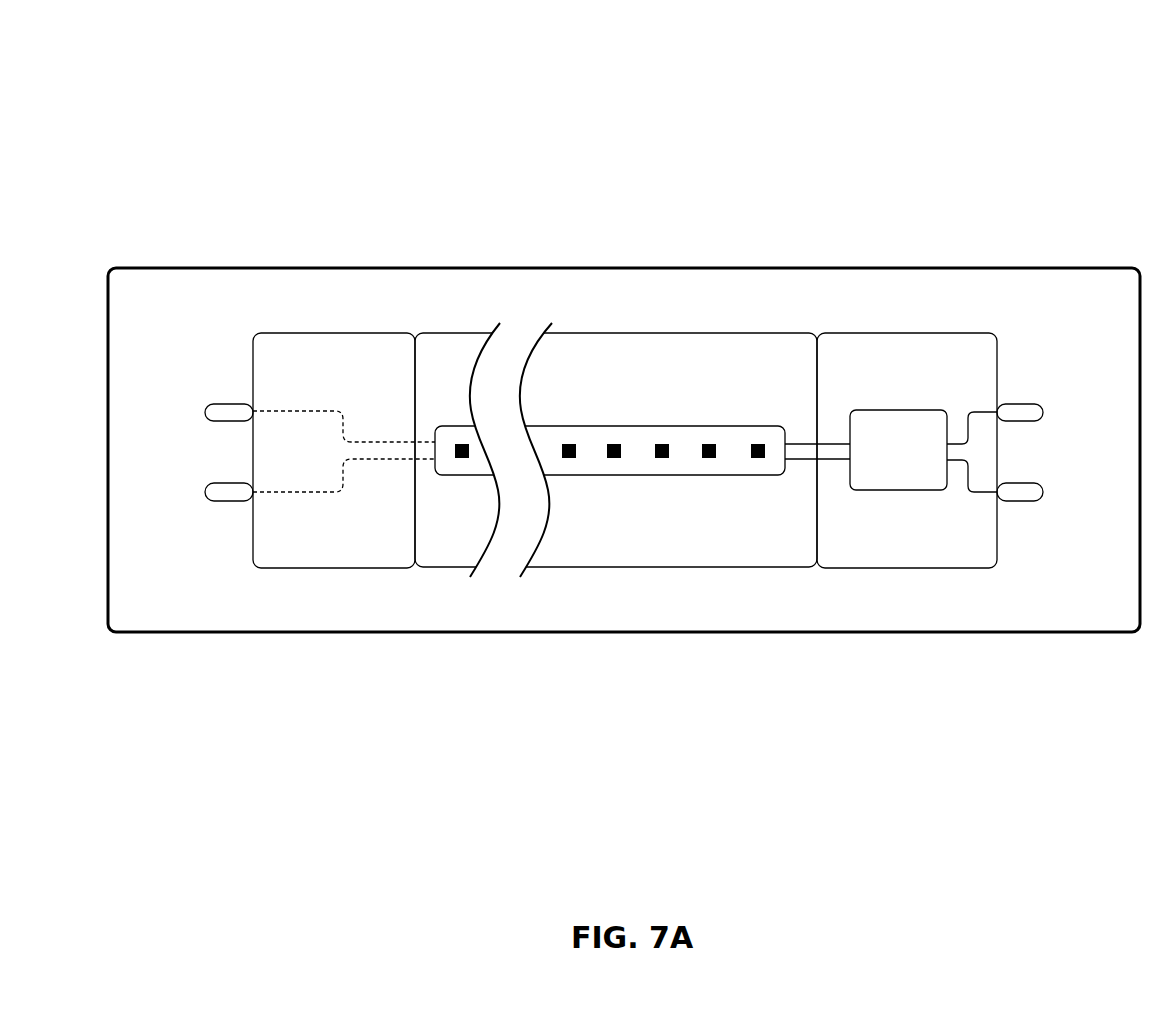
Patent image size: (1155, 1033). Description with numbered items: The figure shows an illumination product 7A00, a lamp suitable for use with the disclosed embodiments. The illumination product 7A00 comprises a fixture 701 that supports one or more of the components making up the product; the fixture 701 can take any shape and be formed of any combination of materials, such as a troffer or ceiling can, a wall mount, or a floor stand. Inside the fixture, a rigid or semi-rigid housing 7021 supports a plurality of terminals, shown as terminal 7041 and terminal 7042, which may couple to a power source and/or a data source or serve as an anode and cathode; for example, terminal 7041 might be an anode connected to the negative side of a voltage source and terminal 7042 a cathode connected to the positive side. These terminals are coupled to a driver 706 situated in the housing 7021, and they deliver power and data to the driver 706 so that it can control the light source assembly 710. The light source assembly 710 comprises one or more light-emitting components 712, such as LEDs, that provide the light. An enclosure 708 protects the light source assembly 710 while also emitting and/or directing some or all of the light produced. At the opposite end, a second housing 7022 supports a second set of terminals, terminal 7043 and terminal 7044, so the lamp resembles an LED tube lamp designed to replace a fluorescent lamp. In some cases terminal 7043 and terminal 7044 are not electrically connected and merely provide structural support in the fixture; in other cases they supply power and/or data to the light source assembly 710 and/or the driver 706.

The illumination product 7A00 is at (88, 63).
The fixture 701 is at (624, 450).
The housing 7021 is at (907, 450).
The housing 7022 is at (344, 450).
The terminal 7041 is at (1034, 404).
The terminal 7042 is at (1034, 501).
The terminal 7043 is at (216, 404).
The terminal 7044 is at (216, 502).
The driver 706 is at (923, 451).
The enclosure 708 is at (616, 450).
The light source assembly 710 is at (642, 491).
The light-emitting component 712 is at (613, 460).